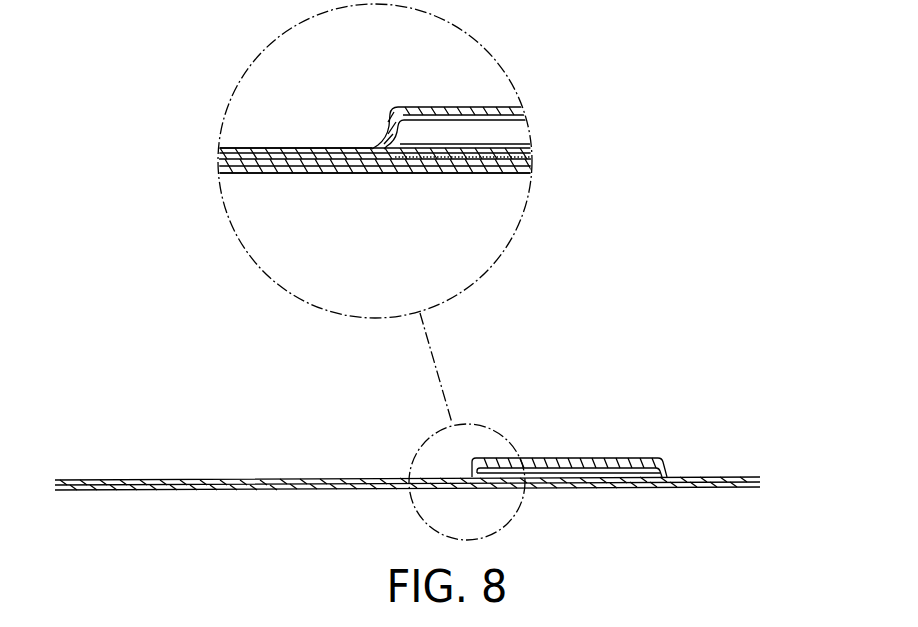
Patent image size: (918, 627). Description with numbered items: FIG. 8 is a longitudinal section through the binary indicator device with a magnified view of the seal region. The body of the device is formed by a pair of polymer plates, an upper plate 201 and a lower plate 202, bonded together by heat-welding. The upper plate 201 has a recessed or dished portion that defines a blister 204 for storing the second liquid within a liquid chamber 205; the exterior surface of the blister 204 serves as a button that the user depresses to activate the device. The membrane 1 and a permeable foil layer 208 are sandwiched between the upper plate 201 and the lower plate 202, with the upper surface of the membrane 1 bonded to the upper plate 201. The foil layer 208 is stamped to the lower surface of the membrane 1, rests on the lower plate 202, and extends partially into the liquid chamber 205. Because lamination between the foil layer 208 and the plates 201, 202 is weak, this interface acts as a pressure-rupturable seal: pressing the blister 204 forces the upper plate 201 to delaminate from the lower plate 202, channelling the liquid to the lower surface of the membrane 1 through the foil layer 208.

The membrane 1 is at (322, 148).
The upper plate 201 is at (762, 478).
The lower plate 202 is at (762, 482).
The blister 204 is at (551, 458).
The liquid chamber 205 is at (608, 476).
The permeable foil layer 208 is at (467, 174).